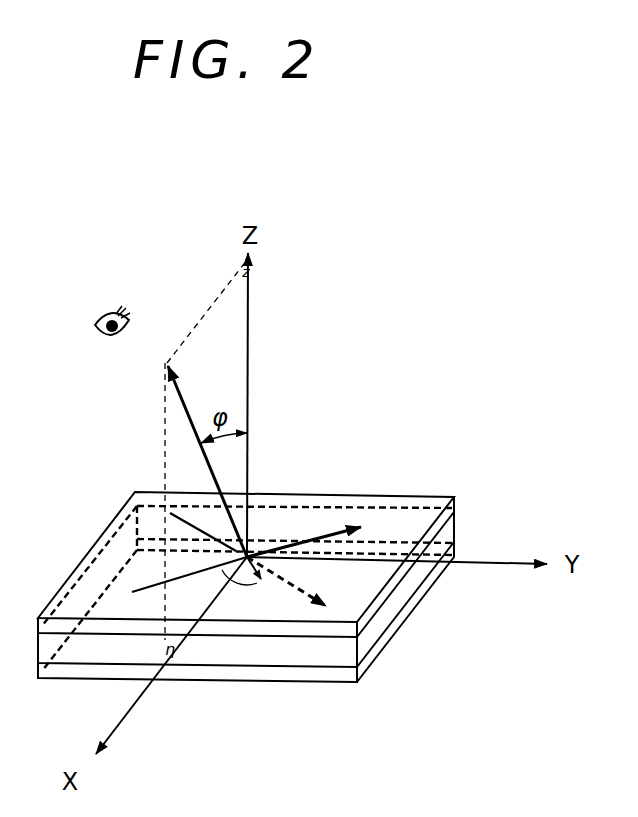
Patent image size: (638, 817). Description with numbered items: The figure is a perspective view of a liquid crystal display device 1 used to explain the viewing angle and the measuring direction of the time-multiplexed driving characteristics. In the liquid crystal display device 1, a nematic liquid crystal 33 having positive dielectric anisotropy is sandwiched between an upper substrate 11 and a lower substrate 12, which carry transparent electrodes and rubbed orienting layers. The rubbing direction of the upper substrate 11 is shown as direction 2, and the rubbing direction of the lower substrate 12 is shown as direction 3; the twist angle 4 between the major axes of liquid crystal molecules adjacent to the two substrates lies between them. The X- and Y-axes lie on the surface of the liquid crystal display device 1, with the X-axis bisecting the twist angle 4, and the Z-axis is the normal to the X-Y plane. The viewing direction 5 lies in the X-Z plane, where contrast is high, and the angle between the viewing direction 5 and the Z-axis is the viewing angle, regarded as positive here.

The liquid crystal display device 1 is at (337, 495).
The upper substrate 11 is at (398, 497).
The nematic liquid crystal 33 is at (450, 528).
The lower substrate 12 is at (452, 548).
The rubbing direction of upper substrate 2 is at (330, 532).
The rubbing direction of lower substrate 3 is at (303, 587).
The twist angle 4 is at (240, 583).
The viewing direction 5 is at (188, 414).